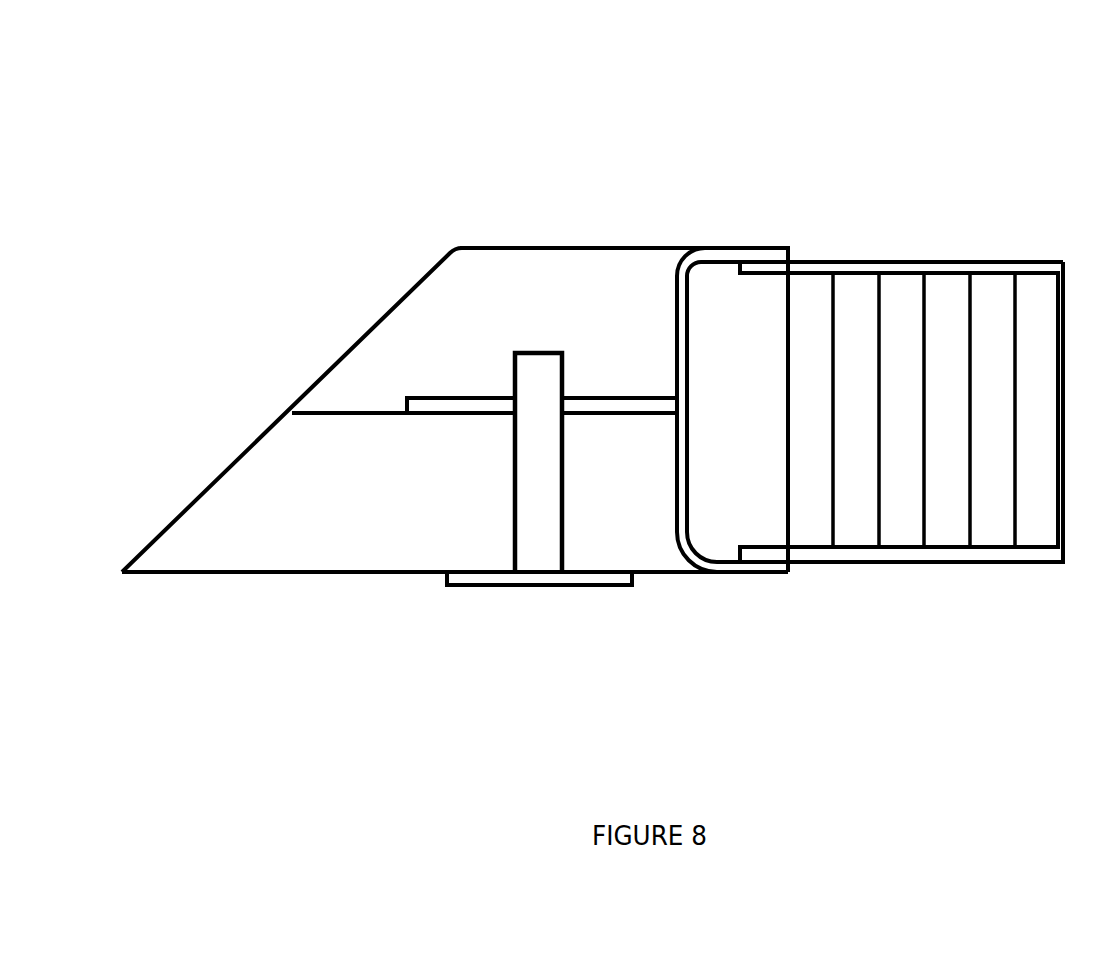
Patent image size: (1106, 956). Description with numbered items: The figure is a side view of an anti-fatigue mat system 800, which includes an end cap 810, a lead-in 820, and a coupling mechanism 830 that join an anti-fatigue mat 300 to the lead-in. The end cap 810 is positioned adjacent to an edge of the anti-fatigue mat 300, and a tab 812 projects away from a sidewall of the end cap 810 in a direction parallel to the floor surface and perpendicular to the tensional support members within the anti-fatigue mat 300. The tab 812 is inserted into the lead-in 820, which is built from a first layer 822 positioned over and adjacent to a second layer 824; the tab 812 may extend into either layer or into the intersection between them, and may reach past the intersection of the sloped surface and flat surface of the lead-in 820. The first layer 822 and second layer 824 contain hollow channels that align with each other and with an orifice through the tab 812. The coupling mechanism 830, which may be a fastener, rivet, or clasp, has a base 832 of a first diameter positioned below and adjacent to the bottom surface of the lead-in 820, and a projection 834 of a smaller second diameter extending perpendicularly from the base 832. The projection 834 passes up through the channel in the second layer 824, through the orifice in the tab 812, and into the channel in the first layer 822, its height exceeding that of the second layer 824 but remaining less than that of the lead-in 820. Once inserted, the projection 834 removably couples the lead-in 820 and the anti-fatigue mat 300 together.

The anti-fatigue mat system 800 is at (222, 128).
The lead-in 820 is at (300, 340).
The first layer 822 is at (523, 307).
The second layer 824 is at (412, 497).
The tab 812 is at (617, 398).
The end cap 810 is at (680, 320).
The anti-fatigue mat 300 is at (893, 370).
The coupling mechanism 830 is at (523, 545).
The base 832 is at (572, 575).
The projection 834 is at (537, 465).